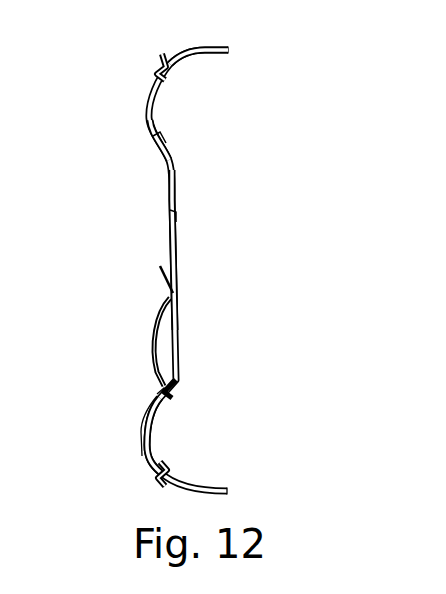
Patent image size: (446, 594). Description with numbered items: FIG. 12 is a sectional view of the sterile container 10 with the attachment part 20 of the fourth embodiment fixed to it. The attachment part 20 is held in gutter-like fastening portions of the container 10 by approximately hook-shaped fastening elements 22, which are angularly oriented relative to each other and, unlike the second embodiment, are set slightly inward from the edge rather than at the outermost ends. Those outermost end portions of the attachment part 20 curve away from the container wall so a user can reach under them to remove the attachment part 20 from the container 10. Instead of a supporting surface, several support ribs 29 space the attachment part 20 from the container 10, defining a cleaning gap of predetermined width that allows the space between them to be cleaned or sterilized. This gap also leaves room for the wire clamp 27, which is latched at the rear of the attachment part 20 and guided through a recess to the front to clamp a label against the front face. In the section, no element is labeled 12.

The container 10 is at (163, 140).
The flange 12 is at (168, 82).
The attachment part 20 is at (163, 188).
The fastening element 22 is at (156, 71).
The wire clamp 27 is at (162, 333).
The support rib 29 is at (172, 395).